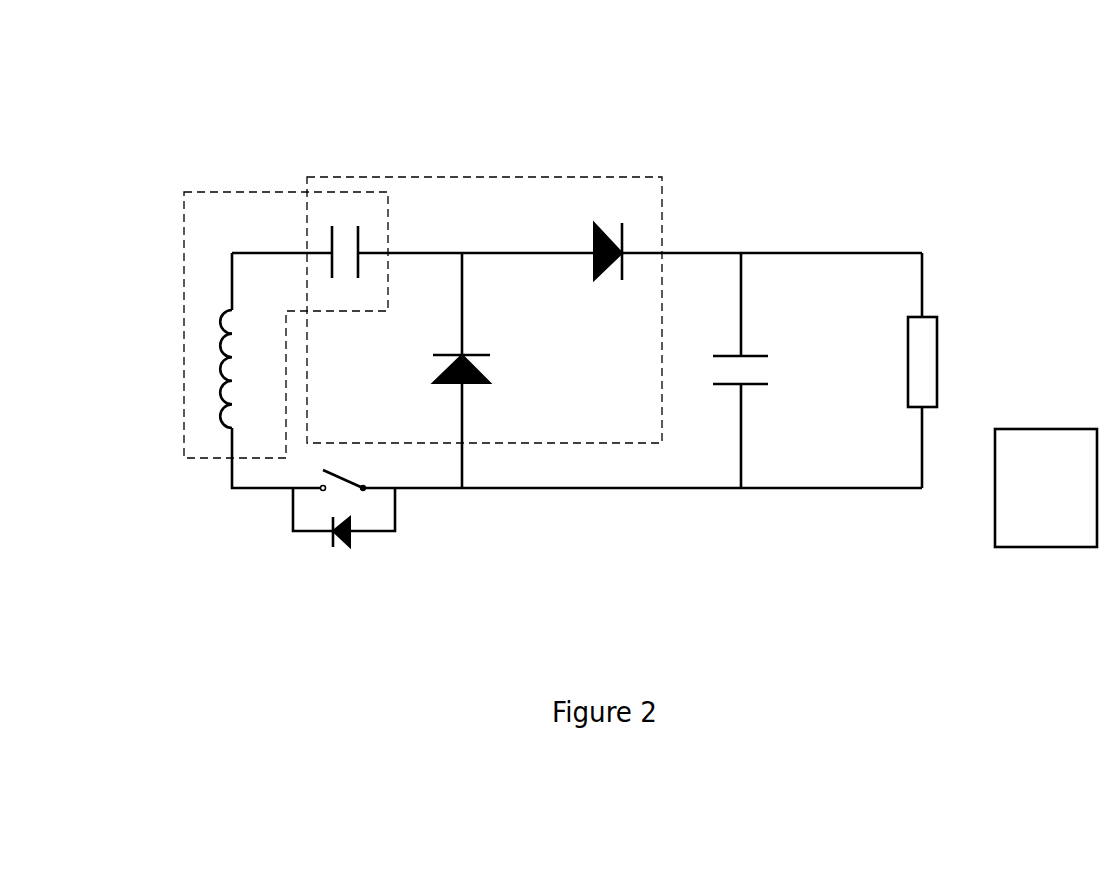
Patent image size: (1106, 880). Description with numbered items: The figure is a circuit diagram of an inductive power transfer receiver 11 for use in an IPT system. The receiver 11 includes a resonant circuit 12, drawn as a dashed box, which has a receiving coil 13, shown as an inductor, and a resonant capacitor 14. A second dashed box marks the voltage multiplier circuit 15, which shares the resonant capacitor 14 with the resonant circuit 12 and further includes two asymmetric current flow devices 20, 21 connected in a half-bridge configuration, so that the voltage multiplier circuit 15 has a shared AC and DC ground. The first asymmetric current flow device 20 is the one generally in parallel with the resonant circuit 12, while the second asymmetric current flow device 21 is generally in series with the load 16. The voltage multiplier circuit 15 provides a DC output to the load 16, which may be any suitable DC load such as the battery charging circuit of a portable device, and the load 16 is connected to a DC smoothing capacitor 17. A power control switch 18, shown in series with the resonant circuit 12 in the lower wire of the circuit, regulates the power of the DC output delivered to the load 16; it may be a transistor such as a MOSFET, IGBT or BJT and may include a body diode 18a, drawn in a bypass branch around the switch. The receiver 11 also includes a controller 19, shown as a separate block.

The inductive power transfer receiver 11 is at (845, 95).
The resonant circuit 12 is at (257, 192).
The receiving coil 13 is at (223, 382).
The resonant capacitor 14 is at (358, 234).
The voltage multiplier circuit 15 is at (485, 178).
The load 16 is at (938, 335).
The DC smoothing capacitor 17 is at (758, 384).
The power control switch 18 is at (322, 490).
The body diode 18a is at (332, 537).
The controller 19 is at (1035, 547).
The first asymmetric current flow device 20 is at (485, 383).
The second asymmetric current flow device 21 is at (598, 228).